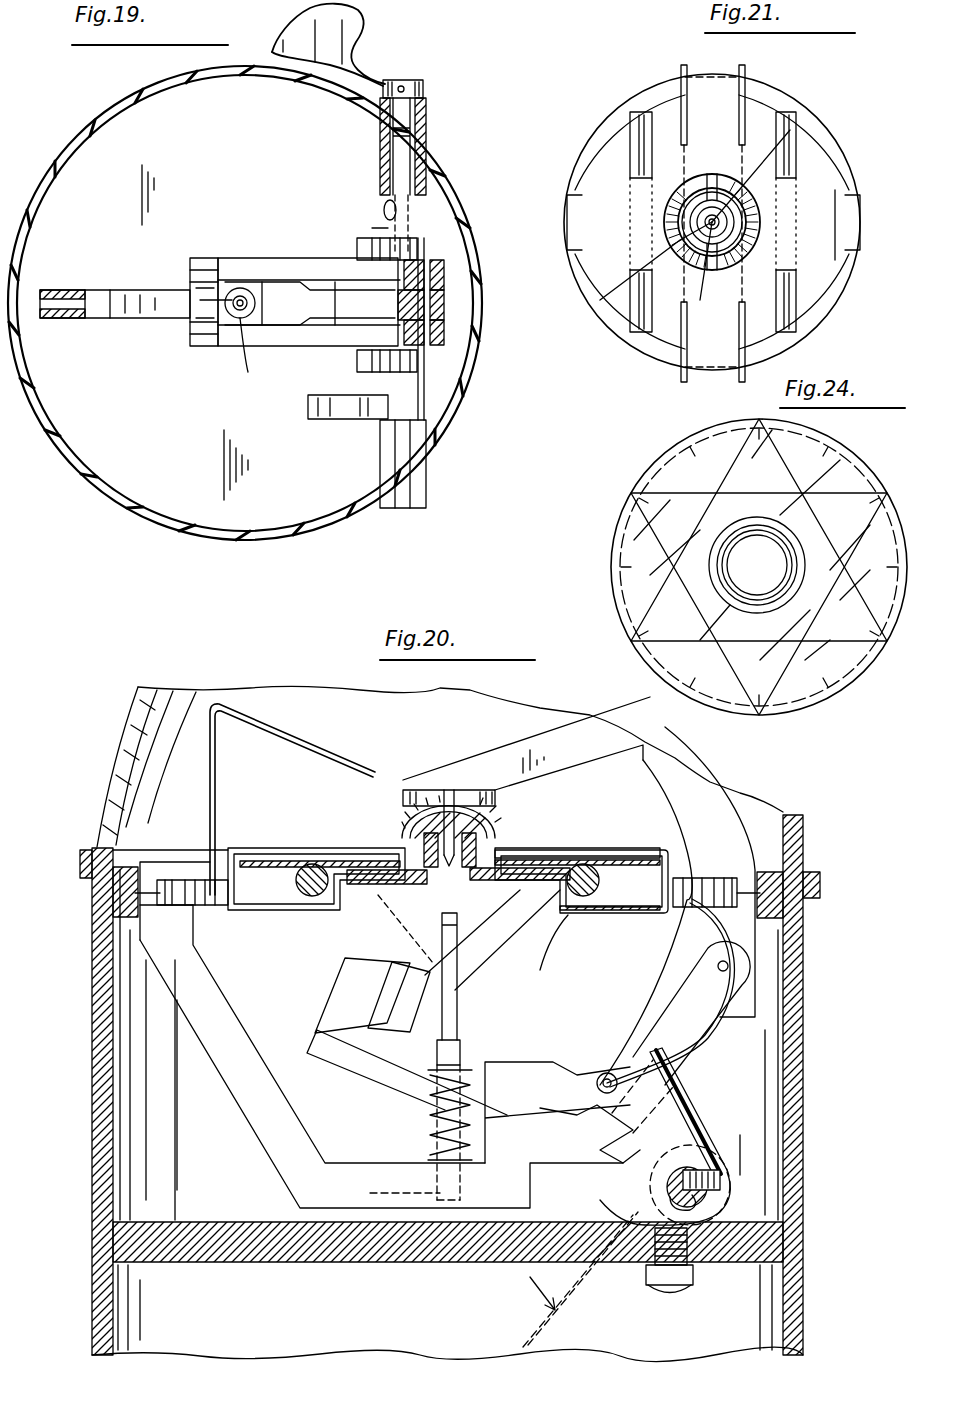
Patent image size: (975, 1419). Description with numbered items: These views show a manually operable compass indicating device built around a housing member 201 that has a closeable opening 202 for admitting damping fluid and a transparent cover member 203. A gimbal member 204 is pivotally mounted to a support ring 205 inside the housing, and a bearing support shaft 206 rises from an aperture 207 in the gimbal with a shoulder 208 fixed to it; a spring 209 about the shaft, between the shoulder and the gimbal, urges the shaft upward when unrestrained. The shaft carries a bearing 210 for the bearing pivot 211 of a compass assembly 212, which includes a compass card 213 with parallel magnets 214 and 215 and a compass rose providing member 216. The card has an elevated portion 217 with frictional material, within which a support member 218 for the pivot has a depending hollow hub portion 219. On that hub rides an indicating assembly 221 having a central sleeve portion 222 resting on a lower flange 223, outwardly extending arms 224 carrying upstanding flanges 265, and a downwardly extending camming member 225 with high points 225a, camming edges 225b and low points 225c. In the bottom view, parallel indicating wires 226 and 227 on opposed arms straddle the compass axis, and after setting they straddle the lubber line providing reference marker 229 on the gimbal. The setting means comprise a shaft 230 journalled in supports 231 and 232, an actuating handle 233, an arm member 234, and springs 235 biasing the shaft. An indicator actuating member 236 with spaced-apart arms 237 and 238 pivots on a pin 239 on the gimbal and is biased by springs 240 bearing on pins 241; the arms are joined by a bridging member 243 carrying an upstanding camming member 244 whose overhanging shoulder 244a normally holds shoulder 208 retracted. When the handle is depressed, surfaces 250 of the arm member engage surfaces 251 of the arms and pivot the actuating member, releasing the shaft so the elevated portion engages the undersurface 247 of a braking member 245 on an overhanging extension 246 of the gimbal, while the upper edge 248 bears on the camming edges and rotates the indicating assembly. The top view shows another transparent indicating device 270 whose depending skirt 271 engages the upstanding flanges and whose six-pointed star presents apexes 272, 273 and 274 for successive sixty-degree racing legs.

In FIG. 19, the housing member 201 is at (95, 122).
In FIG. 20, the housing member 201 is at (92, 1030).
In FIG. 20, the closeable opening 202 is at (688, 1265).
In FIG. 20, the transparent cover member 203 is at (110, 748).
In FIG. 19, the gimbal member 204 is at (100, 315).
In FIG. 20, the gimbal member 204 is at (265, 1128).
In FIG. 20, the support ring 205 is at (113, 900).
In FIG. 19, the bearing support shaft 206 is at (245, 290).
In FIG. 20, the bearing support shaft 206 is at (460, 1035).
In FIG. 20, the aperture 207 is at (380, 1195).
In FIG. 19, the shoulder 208 is at (245, 351).
In FIG. 20, the shoulder 208 is at (430, 1085).
In FIG. 20, the spring 209 is at (428, 1125).
In FIG. 20, the bearing 210 is at (515, 918).
In FIG. 21, the bearing pivot 211 is at (705, 195).
In FIG. 20, the bearing pivot 211 is at (448, 790).
In FIG. 20, the compass assembly 212 is at (636, 842).
In FIG. 20, the compass card 213 is at (447, 892).
In FIG. 21, the magnet 214 is at (790, 305).
In FIG. 20, the magnet 214 is at (588, 898).
In FIG. 21, the magnet 215 is at (635, 330).
In FIG. 20, the magnet 215 is at (310, 896).
In FIG. 20, the compass rose providing member 216 is at (600, 850).
In FIG. 20, the elevated portion 217 is at (485, 818).
In FIG. 20, the support member 218 is at (465, 812).
In FIG. 20, the hollow shaft or hub portion 219 is at (495, 835).
In FIG. 20, the indicating assembly 221 is at (580, 938).
In FIG. 20, the central sleeve portion 222 is at (500, 845).
In FIG. 21, the lower flange 223 is at (705, 95).
In FIG. 20, the lower flange 223 is at (520, 890).
In FIG. 20, the flanges or arms 224 is at (252, 912).
In FIG. 21, the camming member 225 is at (660, 216).
In FIG. 21, the high points 225a is at (760, 195).
In FIG. 20, the high points 225a is at (416, 1020).
In FIG. 21, the camming edges 225b is at (716, 276).
In FIG. 20, the camming edges 225b is at (504, 998).
In FIG. 21, the low points 225c is at (772, 144).
In FIG. 20, the low points 225c is at (360, 940).
In FIG. 21, the indicating wire 226 is at (682, 100).
In FIG. 21, the indicating wire 227 is at (790, 345).
In FIG. 19, the lubber line providing reference marker 229 is at (98, 290).
In FIG. 20, the lubber line providing reference marker 229 is at (312, 735).
In FIG. 19, the shaft 230 is at (397, 188).
In FIG. 20, the shaft 230 is at (730, 1197).
In FIG. 19, the support 231 is at (425, 140).
In FIG. 19, the support 232 is at (410, 480).
In FIG. 19, the actuating handle 233 is at (348, 40).
In FIG. 20, the actuating handle 233 is at (525, 1328).
In FIG. 19, the arm member 234 is at (430, 222).
In FIG. 20, the arm member 234 is at (705, 1135).
In FIG. 19, the spring 235 is at (338, 420).
In FIG. 20, the spring 235 is at (605, 1204).
In FIG. 19, the indicator actuating member 236 is at (294, 368).
In FIG. 20, the indicator actuating member 236 is at (305, 1016).
In FIG. 19, the arm 237 is at (236, 258).
In FIG. 19, the arm 238 is at (225, 345).
In FIG. 20, the arm 238 is at (380, 1060).
In FIG. 19, the pin 239 is at (445, 342).
In FIG. 20, the pin 239 is at (730, 965).
In FIG. 19, the spring 240 is at (357, 249).
In FIG. 20, the spring 240 is at (690, 1050).
In FIG. 19, the pin 241 is at (380, 228).
In FIG. 20, the pin 241 is at (600, 1095).
In FIG. 19, the bridging member 243 is at (195, 345).
In FIG. 20, the bridging member 243 is at (355, 985).
In FIG. 19, the camming member 244 is at (200, 300).
In FIG. 20, the camming member 244 is at (345, 955).
In FIG. 20, the overhanging shoulder 244a is at (403, 997).
In FIG. 20, the braking member 245 is at (420, 792).
In FIG. 20, the overhanging extension 246 is at (568, 740).
In FIG. 20, the undersurface 247 is at (420, 818).
In FIG. 19, the upper edge 248 is at (205, 265).
In FIG. 20, the upper edge 248 is at (395, 868).
In FIG. 19, the surface 250 is at (445, 380).
In FIG. 20, the surface 250 is at (672, 1095).
In FIG. 20, the surface 251 is at (646, 1102).
In FIG. 20, the upstanding flange 265 is at (240, 890).
In FIG. 24, the indicating device 270 is at (604, 560).
In FIG. 24, the depending skirt 271 is at (640, 473).
In FIG. 24, the apex 272 is at (755, 458).
In FIG. 24, the apex 273 is at (640, 642).
In FIG. 24, the apex 274 is at (870, 633).